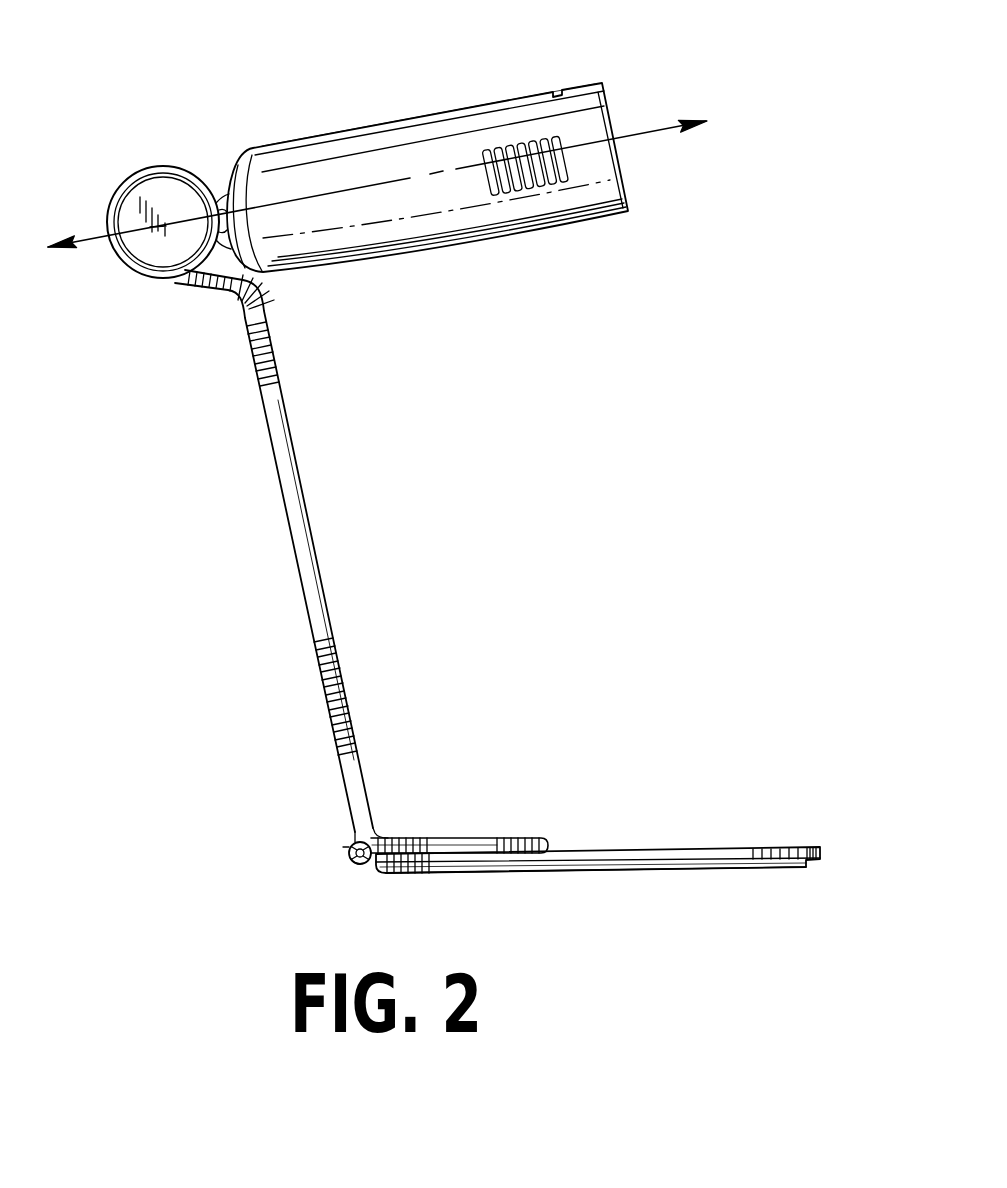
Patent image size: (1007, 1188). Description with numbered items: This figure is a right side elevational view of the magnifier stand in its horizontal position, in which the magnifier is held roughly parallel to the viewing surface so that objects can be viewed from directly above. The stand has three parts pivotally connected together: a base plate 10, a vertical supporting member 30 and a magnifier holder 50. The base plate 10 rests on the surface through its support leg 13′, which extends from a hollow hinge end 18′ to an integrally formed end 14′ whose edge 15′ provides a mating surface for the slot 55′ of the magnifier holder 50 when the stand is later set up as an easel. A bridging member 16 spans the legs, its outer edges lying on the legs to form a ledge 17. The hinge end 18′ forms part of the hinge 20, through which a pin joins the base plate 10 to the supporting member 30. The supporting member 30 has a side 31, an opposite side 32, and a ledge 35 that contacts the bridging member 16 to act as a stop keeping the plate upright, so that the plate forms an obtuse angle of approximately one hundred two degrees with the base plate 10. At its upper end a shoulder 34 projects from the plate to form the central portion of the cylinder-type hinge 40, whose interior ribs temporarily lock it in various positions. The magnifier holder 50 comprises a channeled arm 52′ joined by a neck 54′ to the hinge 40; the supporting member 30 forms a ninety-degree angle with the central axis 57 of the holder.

The base plate 10 is at (598, 806).
The support leg 13′ is at (585, 864).
The end of support leg 14′ is at (728, 870).
The edge 15′ is at (822, 847).
The bridging member 16 is at (518, 838).
The ledge 17 is at (553, 848).
The hinge end 18′ is at (350, 862).
The hinge 20 is at (315, 830).
The vertical supporting member 30 is at (274, 551).
The side 31 is at (323, 593).
The side 32 is at (314, 647).
The shoulder 34 is at (265, 292).
The ledge 35 is at (385, 873).
The hinge 40 is at (144, 185).
The magnifier holder 50 is at (427, 161).
The channeled arm 52′ is at (344, 157).
The neck 54′ is at (218, 198).
The slot 55′ is at (561, 89).
The central axis 57 is at (402, 176).